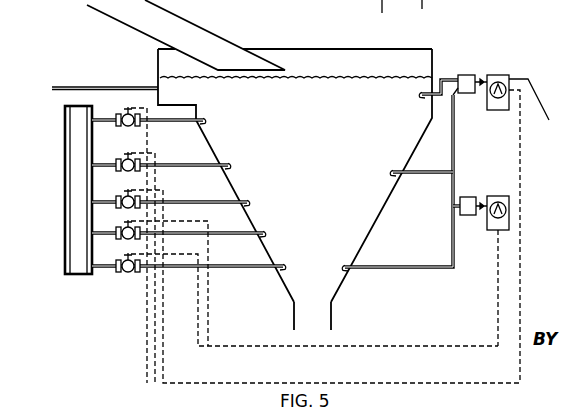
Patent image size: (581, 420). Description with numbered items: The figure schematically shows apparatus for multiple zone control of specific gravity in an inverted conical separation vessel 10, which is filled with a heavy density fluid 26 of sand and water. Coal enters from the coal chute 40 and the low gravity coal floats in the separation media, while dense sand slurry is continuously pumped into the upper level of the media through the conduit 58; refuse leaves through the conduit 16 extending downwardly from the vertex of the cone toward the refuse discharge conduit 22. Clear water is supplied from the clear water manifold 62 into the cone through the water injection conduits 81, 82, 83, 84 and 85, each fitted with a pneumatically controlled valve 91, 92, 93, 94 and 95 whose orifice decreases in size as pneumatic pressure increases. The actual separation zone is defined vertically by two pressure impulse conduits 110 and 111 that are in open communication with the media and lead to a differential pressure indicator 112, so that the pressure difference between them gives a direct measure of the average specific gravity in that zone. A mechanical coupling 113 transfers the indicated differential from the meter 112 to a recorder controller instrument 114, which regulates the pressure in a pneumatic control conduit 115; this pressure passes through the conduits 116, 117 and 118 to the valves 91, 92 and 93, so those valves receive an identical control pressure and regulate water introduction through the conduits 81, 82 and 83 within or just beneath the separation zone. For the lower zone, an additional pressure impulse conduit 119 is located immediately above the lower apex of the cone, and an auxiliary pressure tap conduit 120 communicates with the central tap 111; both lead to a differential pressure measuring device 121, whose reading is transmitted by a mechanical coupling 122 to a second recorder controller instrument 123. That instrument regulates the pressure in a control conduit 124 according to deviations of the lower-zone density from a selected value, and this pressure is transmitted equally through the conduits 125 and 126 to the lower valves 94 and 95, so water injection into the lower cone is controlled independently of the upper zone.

The separation vessel 10 is at (432, 122).
The conduit 16 is at (332, 316).
The refuse discharge conduit 22 is at (423, 3).
The heavy density fluid 26 is at (296, 133).
The coal chute 40 is at (175, 15).
The conduit 58 is at (108, 86).
The clear water manifold 62 is at (65, 255).
The water injection conduit 81 is at (109, 123).
The water injection conduit 82 is at (108, 168).
The water injection conduit 83 is at (108, 204).
The water injection conduit 84 is at (108, 236).
The water injection conduit 85 is at (103, 271).
The pneumatically controlled valve 91 is at (141, 125).
The pneumatically controlled valve 92 is at (133, 158).
The pneumatically controlled valve 93 is at (134, 197).
The pneumatically controlled valve 94 is at (136, 231).
The pneumatically controlled valve 95 is at (130, 272).
The pressure impulse conduit 110 is at (452, 73).
The pressure impulse conduit 111 is at (439, 174).
The differential pressure indicator 112 is at (466, 93).
The mechanical coupling 113 is at (486, 73).
The recorder controller instrument 114 is at (532, 110).
The pneumatic control conduit 115 is at (520, 160).
The conduit 116 is at (147, 333).
The conduit 117 is at (155, 350).
The conduit 118 is at (163, 370).
The pressure impulse conduit 119 is at (452, 239).
The auxiliary pressure tap conduit 120 is at (452, 197).
The differential pressure measuring device 121 is at (469, 194).
The mechanical coupling 122 is at (480, 212).
The recorder controller instrument 123 is at (500, 202).
The control conduit 124 is at (498, 293).
The conduit 125 is at (198, 305).
The conduit 126 is at (208, 332).